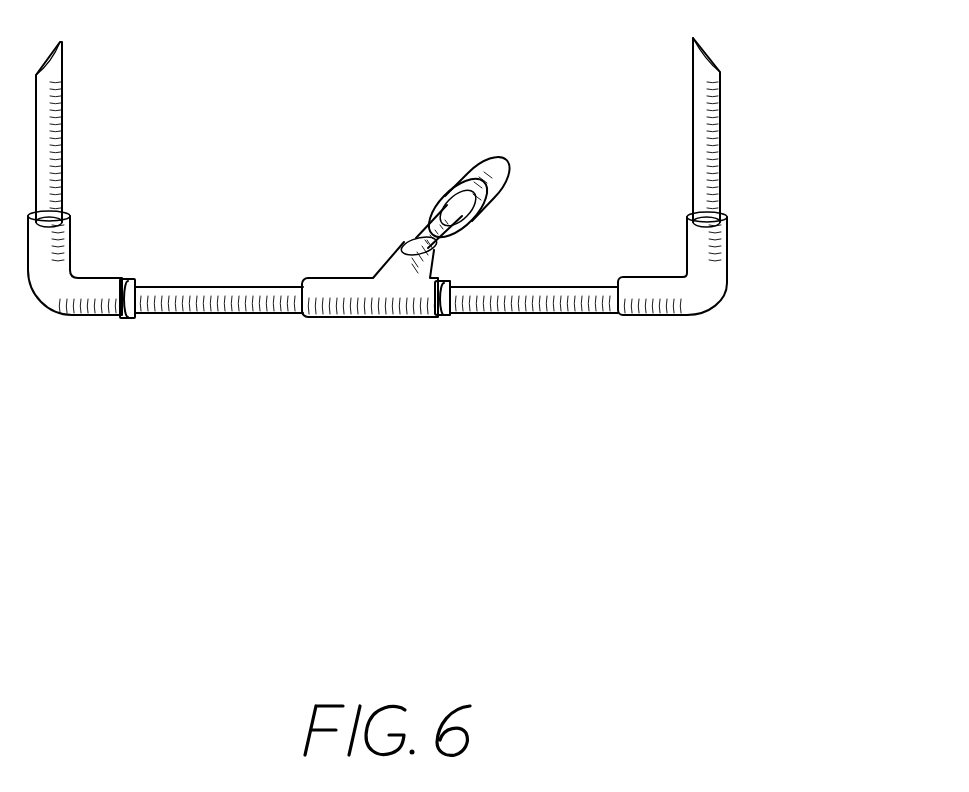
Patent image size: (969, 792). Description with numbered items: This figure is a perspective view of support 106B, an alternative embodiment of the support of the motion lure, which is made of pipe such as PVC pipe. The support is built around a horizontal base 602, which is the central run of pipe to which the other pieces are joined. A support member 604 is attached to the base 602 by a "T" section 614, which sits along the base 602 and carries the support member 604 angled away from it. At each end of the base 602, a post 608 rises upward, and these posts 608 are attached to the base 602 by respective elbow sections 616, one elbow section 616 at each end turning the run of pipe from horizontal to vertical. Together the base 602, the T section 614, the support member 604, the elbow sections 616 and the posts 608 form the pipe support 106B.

The support 106B is at (758, 74).
The posts 608 is at (62, 160).
The elbow sections 616 is at (93, 307).
The base 602 is at (252, 298).
The "T" section 614 is at (380, 298).
The support member 604 is at (455, 188).